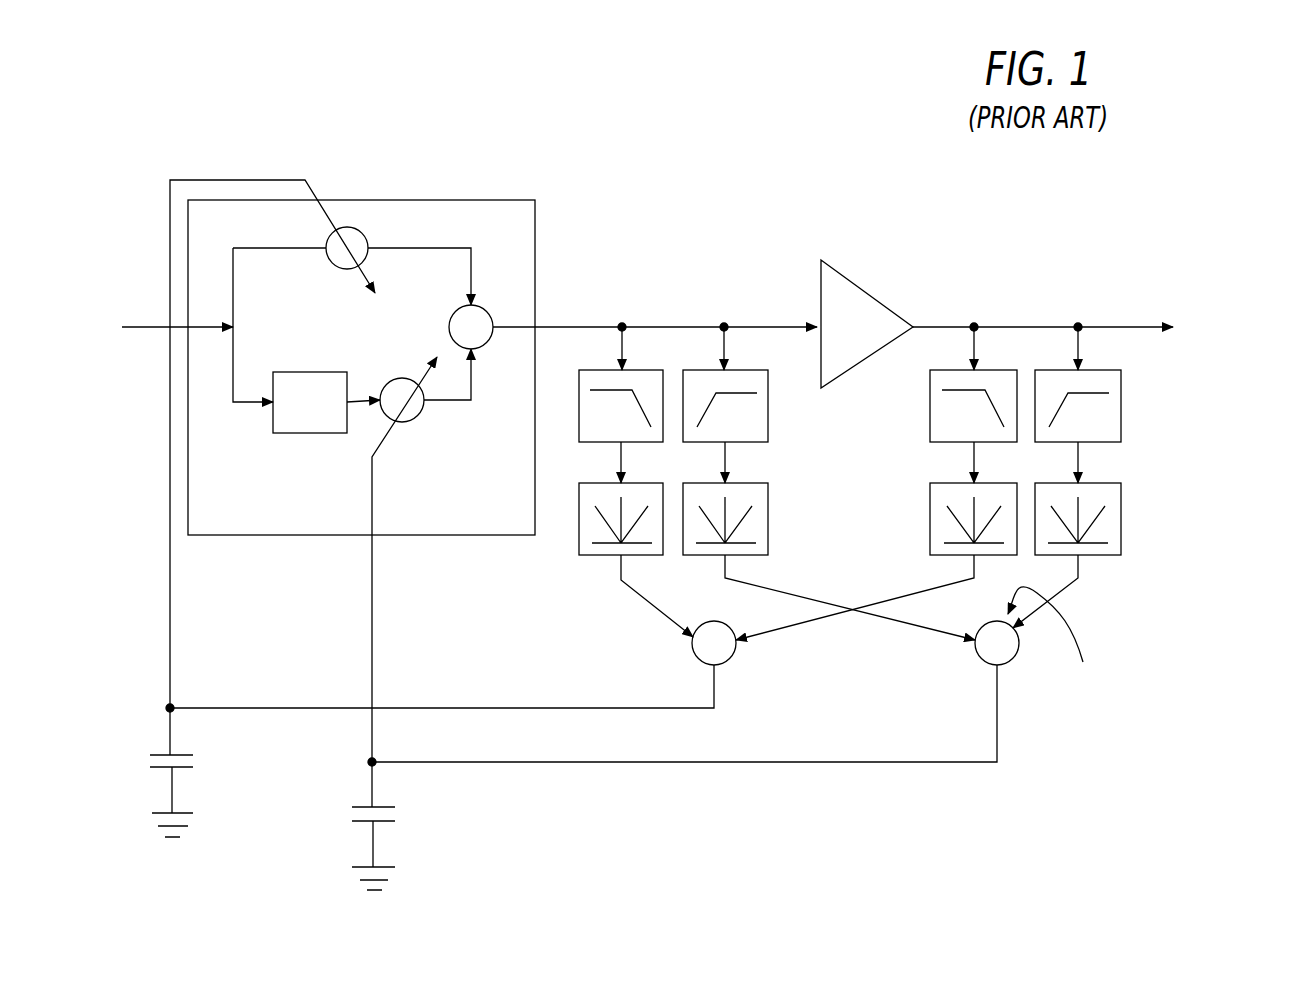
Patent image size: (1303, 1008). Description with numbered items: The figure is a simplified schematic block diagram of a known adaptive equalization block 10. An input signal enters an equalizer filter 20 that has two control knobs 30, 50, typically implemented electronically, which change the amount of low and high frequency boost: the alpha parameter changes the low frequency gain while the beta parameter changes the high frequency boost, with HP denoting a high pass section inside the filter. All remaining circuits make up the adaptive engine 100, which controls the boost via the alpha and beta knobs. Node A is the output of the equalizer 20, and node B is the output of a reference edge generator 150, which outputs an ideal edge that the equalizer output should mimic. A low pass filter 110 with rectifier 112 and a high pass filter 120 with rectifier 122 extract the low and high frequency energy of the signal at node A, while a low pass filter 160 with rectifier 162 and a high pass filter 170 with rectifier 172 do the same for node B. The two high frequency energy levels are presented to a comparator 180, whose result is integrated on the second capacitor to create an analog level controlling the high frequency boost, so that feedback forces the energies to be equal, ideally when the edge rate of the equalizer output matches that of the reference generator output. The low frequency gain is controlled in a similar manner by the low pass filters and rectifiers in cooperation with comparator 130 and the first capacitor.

The adaptive equalization block 10 is at (173, 121).
The equalizer filter 20 is at (488, 199).
The control knob 30 is at (368, 236).
The control knob 50 is at (386, 418).
The adaptive engine 100 is at (913, 803).
The low pass filter 110 is at (596, 368).
The rectifier 112 is at (590, 556).
The high pass filter 120 is at (747, 368).
The rectifier 122 is at (703, 556).
The comparator 130 is at (735, 655).
The reference edge generator 150 is at (862, 286).
The low pass filter 160 is at (948, 368).
The rectifier 162 is at (930, 546).
The high pass filter 170 is at (1048, 368).
The rectifier 172 is at (1123, 527).
The comparator 180 is at (1016, 653).